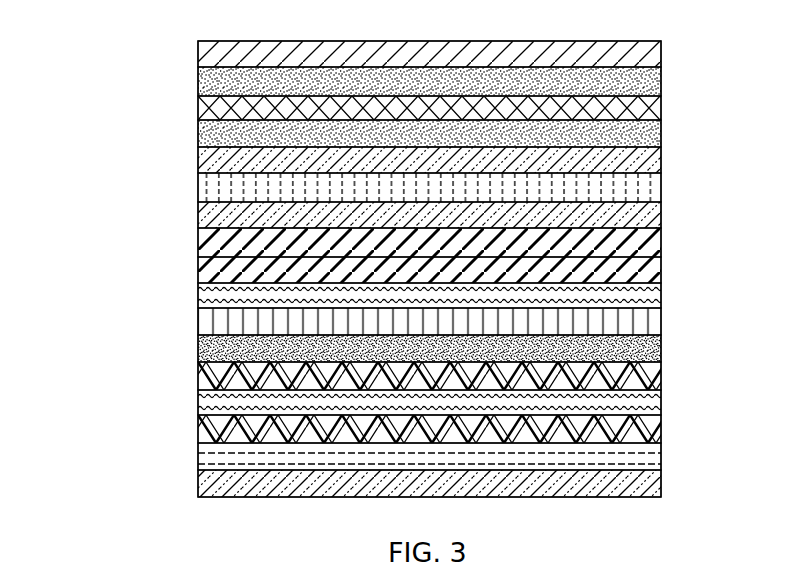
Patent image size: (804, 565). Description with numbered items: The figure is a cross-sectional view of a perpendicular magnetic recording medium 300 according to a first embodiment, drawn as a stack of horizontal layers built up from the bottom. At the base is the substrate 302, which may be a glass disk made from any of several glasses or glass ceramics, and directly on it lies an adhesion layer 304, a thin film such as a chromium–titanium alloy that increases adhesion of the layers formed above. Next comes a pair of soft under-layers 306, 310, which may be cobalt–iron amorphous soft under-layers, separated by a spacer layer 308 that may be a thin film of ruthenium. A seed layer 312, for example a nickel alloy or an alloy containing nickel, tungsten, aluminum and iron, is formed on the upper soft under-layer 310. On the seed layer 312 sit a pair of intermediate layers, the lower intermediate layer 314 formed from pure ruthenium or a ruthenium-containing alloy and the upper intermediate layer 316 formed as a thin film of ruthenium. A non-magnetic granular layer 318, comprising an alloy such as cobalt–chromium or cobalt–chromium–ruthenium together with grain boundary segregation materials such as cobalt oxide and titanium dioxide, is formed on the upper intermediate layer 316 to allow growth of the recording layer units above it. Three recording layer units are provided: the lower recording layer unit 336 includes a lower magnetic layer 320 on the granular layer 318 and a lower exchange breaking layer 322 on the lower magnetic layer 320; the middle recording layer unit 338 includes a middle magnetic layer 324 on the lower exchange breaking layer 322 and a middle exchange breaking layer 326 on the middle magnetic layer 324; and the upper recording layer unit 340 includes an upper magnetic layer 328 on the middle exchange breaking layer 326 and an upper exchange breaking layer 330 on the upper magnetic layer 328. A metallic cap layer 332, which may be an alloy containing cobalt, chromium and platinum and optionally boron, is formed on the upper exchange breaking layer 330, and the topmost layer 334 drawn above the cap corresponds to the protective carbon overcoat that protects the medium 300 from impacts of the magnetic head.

The perpendicular magnetic recording medium 300 is at (85, 54).
The substrate 302 is at (198, 485).
The adhesion layer 304 is at (653, 457).
The soft under-layer 306 is at (198, 422).
The spacer layer 308 is at (653, 405).
The soft under-layer 310 is at (198, 373).
The seed layer 312 is at (653, 345).
The lower intermediate layer 314 is at (198, 320).
The upper intermediate layer 316 is at (653, 293).
The non-magnetic granular layer 318 is at (198, 268).
The lower magnetic layer 320 is at (198, 240).
The lower exchange breaking layer 322 is at (198, 213).
The middle magnetic layer 324 is at (710, 167).
The middle exchange breaking layer 326 is at (653, 158).
The upper magnetic layer 328 is at (198, 137).
The upper exchange breaking layer 330 is at (198, 107).
The metallic cap layer 332 is at (653, 82).
The top layer 334 is at (198, 48).
The lower recording layer unit 336 is at (372, 237).
The middle recording layer unit 338 is at (491, 183).
The upper recording layer unit 340 is at (372, 134).